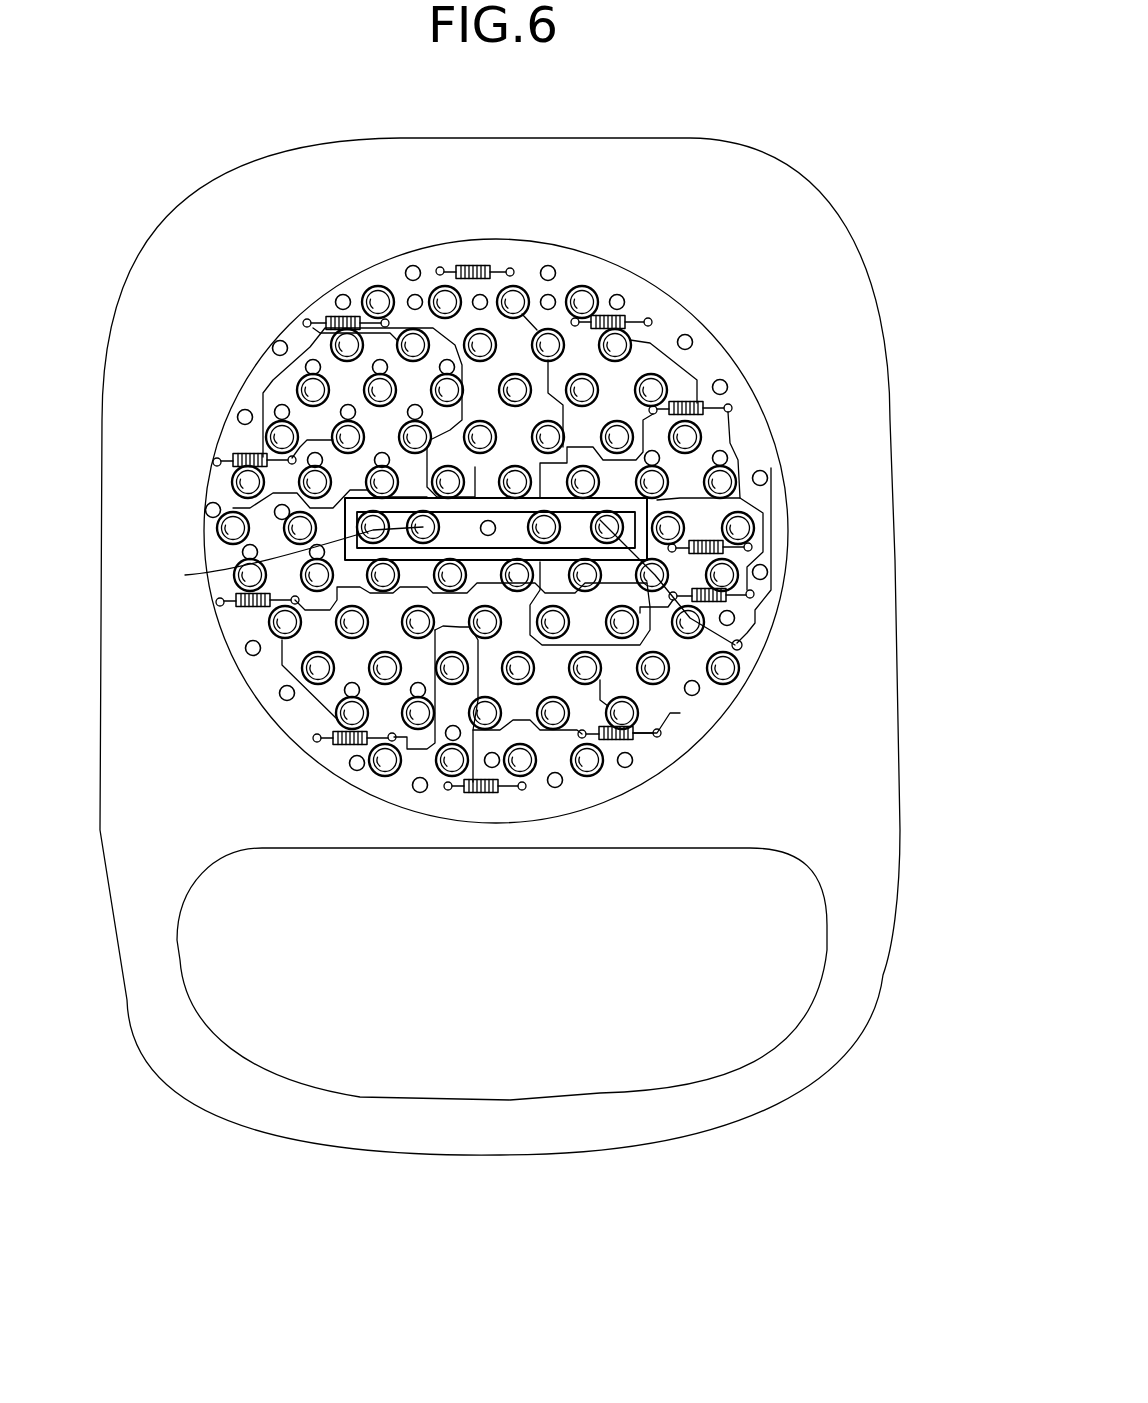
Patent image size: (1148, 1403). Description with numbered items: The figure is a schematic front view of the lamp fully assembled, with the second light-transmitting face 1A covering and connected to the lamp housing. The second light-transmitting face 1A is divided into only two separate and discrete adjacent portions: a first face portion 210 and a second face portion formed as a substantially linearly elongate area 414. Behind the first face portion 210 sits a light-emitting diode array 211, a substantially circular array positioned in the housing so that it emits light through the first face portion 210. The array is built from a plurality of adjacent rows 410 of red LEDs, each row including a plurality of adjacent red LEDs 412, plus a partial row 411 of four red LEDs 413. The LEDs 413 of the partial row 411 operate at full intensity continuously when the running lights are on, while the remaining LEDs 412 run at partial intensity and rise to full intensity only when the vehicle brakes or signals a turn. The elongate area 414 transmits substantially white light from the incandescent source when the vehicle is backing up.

The second light-transmitting face 1A is at (883, 970).
The first face portion 210 is at (757, 635).
The light-emitting diode array 211 is at (775, 578).
The rows of LEDs 410 is at (628, 336).
The partial row 411 is at (645, 510).
The red LEDs 412 is at (378, 288).
The red LEDs of the partial row 413 is at (783, 676).
The substantially linearly elongate area 414 is at (688, 1030).